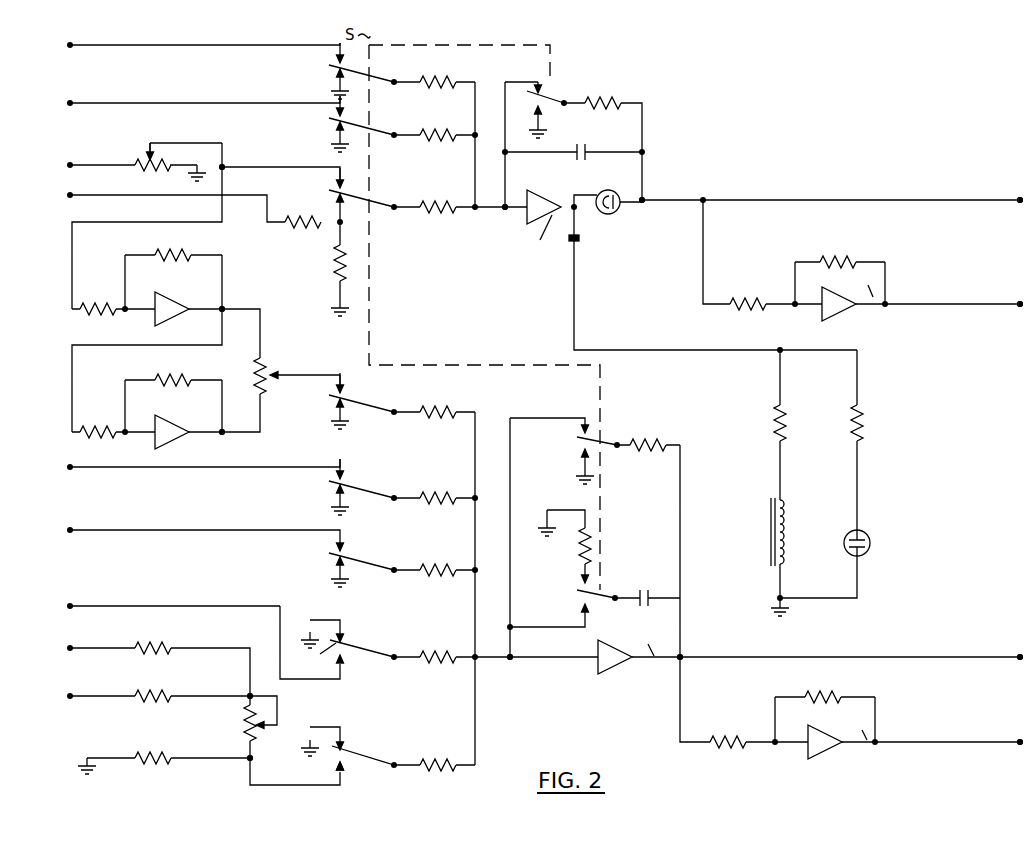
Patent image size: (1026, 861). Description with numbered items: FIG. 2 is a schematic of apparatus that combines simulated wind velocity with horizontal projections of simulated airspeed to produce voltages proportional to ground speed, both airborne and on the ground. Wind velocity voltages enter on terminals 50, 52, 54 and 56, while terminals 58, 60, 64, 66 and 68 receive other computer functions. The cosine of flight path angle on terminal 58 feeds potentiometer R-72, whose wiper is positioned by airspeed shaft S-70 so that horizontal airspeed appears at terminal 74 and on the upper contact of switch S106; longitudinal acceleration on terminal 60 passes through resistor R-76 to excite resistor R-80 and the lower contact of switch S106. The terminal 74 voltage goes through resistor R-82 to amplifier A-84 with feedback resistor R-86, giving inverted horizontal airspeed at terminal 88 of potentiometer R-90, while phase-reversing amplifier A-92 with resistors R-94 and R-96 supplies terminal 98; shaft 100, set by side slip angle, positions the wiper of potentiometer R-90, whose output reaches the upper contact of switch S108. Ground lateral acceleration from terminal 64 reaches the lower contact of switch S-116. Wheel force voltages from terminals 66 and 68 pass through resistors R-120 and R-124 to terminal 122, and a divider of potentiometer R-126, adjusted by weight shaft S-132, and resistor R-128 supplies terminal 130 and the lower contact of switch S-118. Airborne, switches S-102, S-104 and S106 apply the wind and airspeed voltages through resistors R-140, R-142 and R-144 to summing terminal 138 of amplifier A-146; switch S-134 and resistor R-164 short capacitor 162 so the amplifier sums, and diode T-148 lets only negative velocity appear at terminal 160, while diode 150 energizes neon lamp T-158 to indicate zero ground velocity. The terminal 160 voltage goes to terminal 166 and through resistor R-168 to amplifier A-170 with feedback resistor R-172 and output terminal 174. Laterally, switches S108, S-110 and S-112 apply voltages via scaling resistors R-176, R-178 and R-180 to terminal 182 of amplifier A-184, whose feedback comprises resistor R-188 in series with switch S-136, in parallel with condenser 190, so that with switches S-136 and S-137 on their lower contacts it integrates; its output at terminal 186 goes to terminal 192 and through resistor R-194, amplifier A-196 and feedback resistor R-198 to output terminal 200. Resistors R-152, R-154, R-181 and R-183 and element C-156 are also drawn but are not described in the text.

The input terminal 50 is at (66, 48).
The input terminal 52 is at (66, 104).
The input terminal 54 is at (66, 468).
The input terminal 56 is at (66, 531).
The input terminal 58 is at (66, 166).
The input terminal 60 is at (66, 196).
The terminal 64 is at (66, 607).
The input terminal 66 is at (66, 649).
The input terminal 68 is at (66, 697).
The shaft S-70 is at (148, 154).
The potentiometer R-72 is at (136, 170).
The terminal 74 is at (225, 170).
The resistor R-76 is at (290, 228).
The resistor R-80 is at (334, 266).
The resistor R-82 is at (77, 306).
The amplifier A-84 is at (160, 322).
The feedback resistor R-86 is at (154, 249).
The terminal 88 is at (225, 305).
The potentiometer R-90 is at (265, 362).
The phase-reversing amplifier A-92 is at (165, 440).
The input resistor R-94 is at (77, 429).
The feedback resistor R-96 is at (154, 374).
The terminal 98 is at (225, 435).
The shaft 100 is at (280, 380).
The switch S-102 is at (331, 75).
The switch S-104 is at (334, 130).
The switch S106 is at (334, 194).
The switch S108 is at (336, 409).
The switch S-110 is at (335, 494).
The switch S-112 is at (335, 560).
The switch S-116 is at (343, 654).
The switch S-118 is at (348, 758).
The resistor R-120 is at (169, 646).
The terminal 122 is at (248, 694).
The resistor R-124 is at (137, 700).
The potentiometer R-126 is at (246, 722).
The resistor R-128 is at (134, 756).
The terminal 130 is at (248, 760).
The shaft S-132 is at (265, 712).
The switch S-134 is at (548, 108).
The switch S-136 is at (580, 451).
The switch S-137 is at (580, 601).
The terminal 138 is at (503, 215).
The resistor R-140 is at (412, 78).
The resistor R-142 is at (412, 130).
The resistor R-144 is at (412, 202).
The amplifier A-146 is at (533, 191).
The diode T-148 is at (605, 214).
The diode 150 is at (579, 242).
The resistor R-152 is at (776, 426).
The resistor R-154 is at (861, 428).
The inductor / coil C-156 is at (770, 532).
The neon lamp T-158 is at (870, 545).
The output terminal 160 is at (645, 197).
The capacitor 162 is at (587, 158).
The feedback resistor R-164 is at (583, 98).
The terminal 166 is at (1010, 205).
The resistor R-168 is at (728, 300).
The amplifier A-170 is at (828, 322).
The feedback resistor R-172 is at (820, 256).
The output terminal 174 is at (1010, 309).
The scaling resistor R-176 is at (412, 407).
The scaling resistor R-178 is at (412, 493).
The scaling resistor R-180 is at (412, 565).
The resistor R-181 is at (412, 652).
The resistor R-183 is at (412, 760).
The amplifier input terminal 182 is at (510, 660).
The amplifier A-184 is at (598, 687).
The output terminal 186 is at (683, 657).
The feedback resistor R-188 is at (629, 433).
The condenser 190 is at (653, 597).
The terminal 192 is at (1015, 666).
The resistor R-194 is at (708, 738).
The amplifier A-196 is at (818, 765).
The feedback resistor R-198 is at (805, 691).
The output terminal 200 is at (1015, 751).